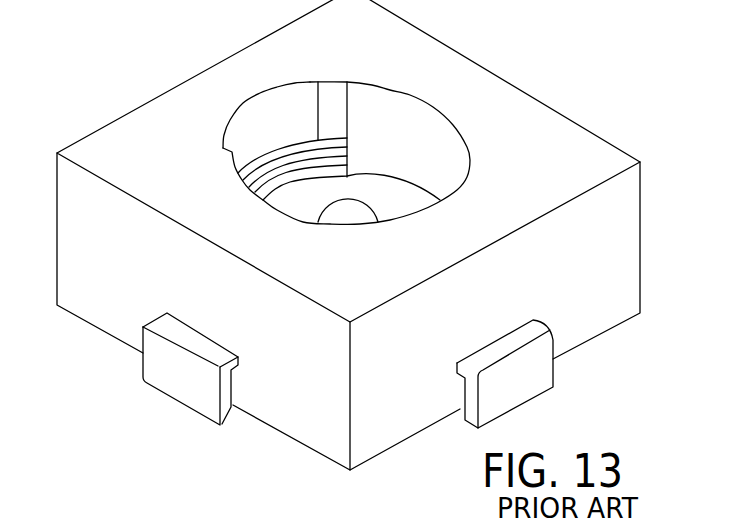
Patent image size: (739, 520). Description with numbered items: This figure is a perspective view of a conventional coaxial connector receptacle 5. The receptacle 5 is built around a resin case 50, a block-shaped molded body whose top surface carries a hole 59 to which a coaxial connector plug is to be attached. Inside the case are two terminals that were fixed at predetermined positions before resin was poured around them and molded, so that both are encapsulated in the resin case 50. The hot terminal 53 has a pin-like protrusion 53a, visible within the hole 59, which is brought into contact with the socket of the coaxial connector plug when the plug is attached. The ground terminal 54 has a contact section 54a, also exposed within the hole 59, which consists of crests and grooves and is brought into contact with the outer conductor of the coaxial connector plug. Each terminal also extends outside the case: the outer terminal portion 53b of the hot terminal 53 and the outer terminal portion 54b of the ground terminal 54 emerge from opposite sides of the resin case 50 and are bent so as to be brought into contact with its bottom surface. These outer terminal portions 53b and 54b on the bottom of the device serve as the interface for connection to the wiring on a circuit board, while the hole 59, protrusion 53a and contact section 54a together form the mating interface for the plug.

The coaxial connector receptacle 5 is at (537, 48).
The resin case 50 is at (548, 142).
The hole 59 is at (366, 118).
The ground terminal 54 is at (279, 280).
The contact section 54a is at (303, 147).
The outer terminal portion 54b is at (172, 379).
The hot terminal 53 is at (451, 329).
The pin-like protrusion 53a is at (350, 197).
The outer terminal portion 53b is at (508, 382).